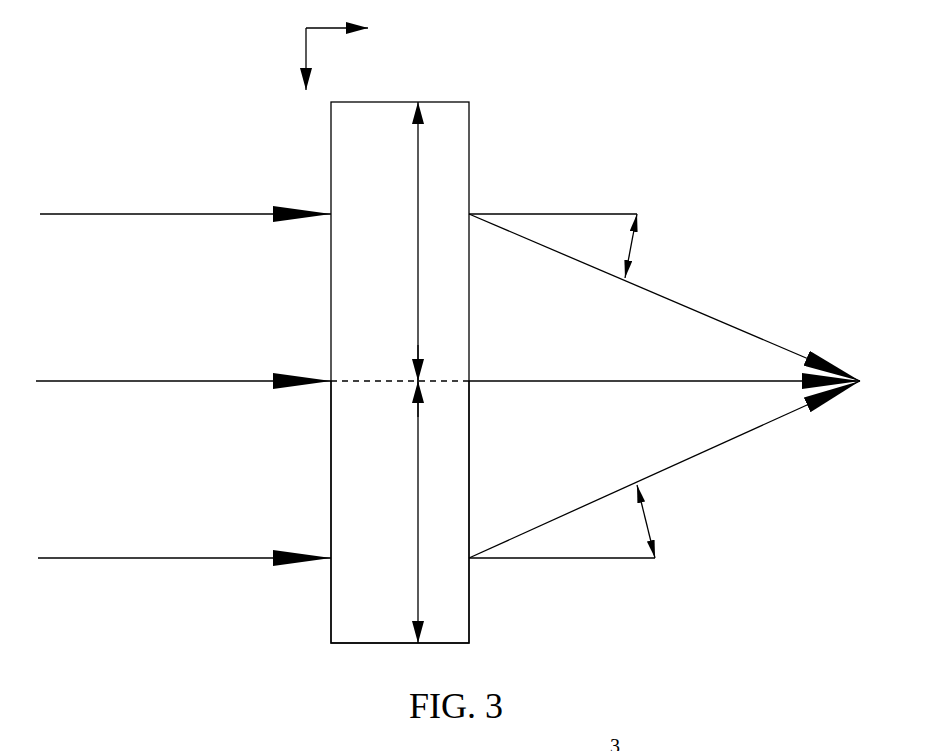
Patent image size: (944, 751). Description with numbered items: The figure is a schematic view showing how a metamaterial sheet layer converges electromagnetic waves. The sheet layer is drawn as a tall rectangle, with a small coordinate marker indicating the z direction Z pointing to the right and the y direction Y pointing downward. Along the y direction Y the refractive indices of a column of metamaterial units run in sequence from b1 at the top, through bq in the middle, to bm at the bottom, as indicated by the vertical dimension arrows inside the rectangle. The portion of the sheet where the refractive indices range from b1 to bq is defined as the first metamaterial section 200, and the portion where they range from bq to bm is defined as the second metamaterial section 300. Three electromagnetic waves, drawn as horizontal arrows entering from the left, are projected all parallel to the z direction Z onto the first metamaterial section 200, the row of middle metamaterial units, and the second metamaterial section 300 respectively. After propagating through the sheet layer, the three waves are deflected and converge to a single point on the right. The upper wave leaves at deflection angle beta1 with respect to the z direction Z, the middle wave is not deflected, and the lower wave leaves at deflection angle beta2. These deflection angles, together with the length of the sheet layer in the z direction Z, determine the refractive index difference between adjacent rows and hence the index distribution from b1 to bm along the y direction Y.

The first metamaterial section 200 is at (370, 195).
The second metamaterial section 300 is at (370, 518).
The refractive index of first metamaterial unit b1 is at (394, 241).
The refractive index of q-th metamaterial unit bq is at (395, 379).
The refractive index of m-th metamaterial unit bm is at (389, 513).
The deflection angle β1 beta1 is at (555, 246).
The deflection angle β2 beta2 is at (570, 521).
The z direction Z is at (343, 17).
The y direction Y is at (300, 71).